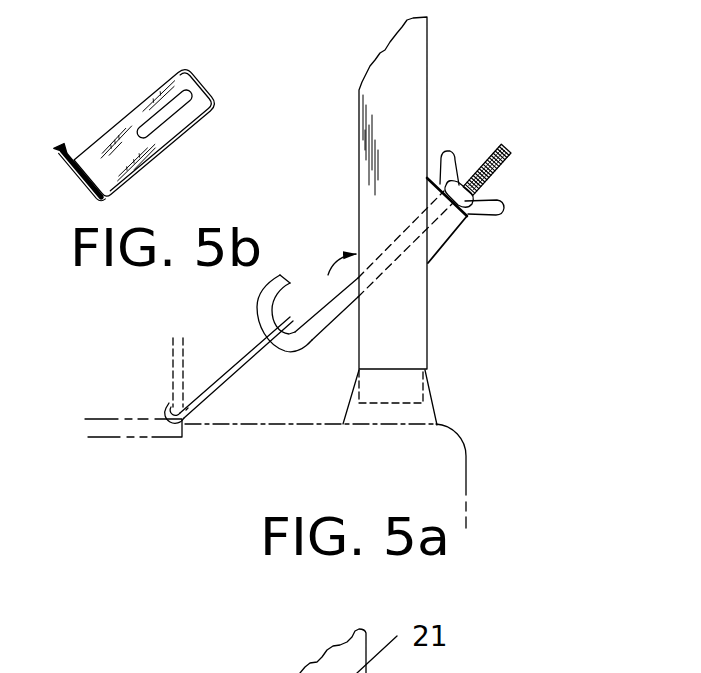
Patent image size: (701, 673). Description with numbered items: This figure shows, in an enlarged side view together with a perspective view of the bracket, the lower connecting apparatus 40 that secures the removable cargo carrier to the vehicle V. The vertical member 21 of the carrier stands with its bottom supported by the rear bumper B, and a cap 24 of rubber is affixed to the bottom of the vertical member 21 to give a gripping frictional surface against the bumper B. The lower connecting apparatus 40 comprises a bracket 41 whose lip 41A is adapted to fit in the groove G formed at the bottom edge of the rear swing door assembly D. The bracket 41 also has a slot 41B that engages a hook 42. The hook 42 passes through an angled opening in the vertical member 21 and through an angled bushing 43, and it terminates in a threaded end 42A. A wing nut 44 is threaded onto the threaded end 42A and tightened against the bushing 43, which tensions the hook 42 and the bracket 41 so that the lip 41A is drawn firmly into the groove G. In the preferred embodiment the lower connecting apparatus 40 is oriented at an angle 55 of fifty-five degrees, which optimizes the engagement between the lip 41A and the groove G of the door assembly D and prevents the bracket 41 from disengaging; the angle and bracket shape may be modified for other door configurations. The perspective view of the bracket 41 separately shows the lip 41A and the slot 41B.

In FIG. 5a, the vertical member 21 is at (413, 72).
In FIG. 5a, the cap 24 is at (437, 396).
In FIG. 5a, the lower connecting apparatus 40 is at (442, 264).
In FIG. 5b, the bracket 41 is at (176, 148).
In FIG. 5a, the bracket 41 is at (196, 406).
In FIG. 5b, the lip 41A is at (71, 153).
In FIG. 5a, the lip 41A is at (177, 404).
In FIG. 5b, the slot 41B is at (165, 106).
In FIG. 5a, the hook 42 is at (333, 313).
In FIG. 5a, the threaded end 42A is at (469, 172).
In FIG. 5a, the angled bushing 43 is at (446, 233).
In FIG. 5a, the wing nut 44 is at (492, 208).
In FIG. 5a, the angle of lower connecting assembly 55 is at (389, 269).
In FIG. 5a, the rear bumper B is at (433, 462).
In FIG. 5a, the rear swing door assembly D is at (166, 343).
In FIG. 5a, the groove G is at (185, 406).
In FIG. 5a, the vehicle V is at (108, 440).